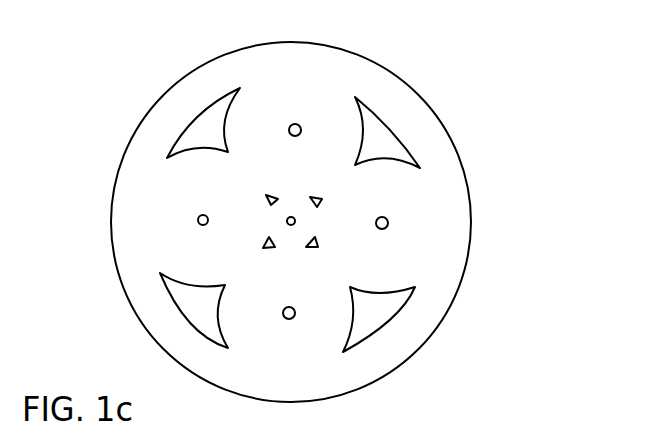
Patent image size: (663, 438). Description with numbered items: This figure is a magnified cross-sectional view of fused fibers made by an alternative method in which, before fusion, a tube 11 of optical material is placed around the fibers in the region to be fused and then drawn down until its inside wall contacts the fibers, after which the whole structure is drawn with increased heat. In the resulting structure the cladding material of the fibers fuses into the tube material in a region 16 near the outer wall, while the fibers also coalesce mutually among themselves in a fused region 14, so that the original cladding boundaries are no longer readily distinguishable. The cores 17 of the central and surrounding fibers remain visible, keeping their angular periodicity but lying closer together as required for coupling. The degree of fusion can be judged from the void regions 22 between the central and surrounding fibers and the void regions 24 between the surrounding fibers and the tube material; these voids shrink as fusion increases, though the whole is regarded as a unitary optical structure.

The tube 11 is at (423, 130).
The fused region 14 is at (355, 193).
The region 16 is at (438, 258).
The cores 17 is at (198, 221).
The void regions 22 is at (265, 198).
The void regions 24 is at (197, 122).